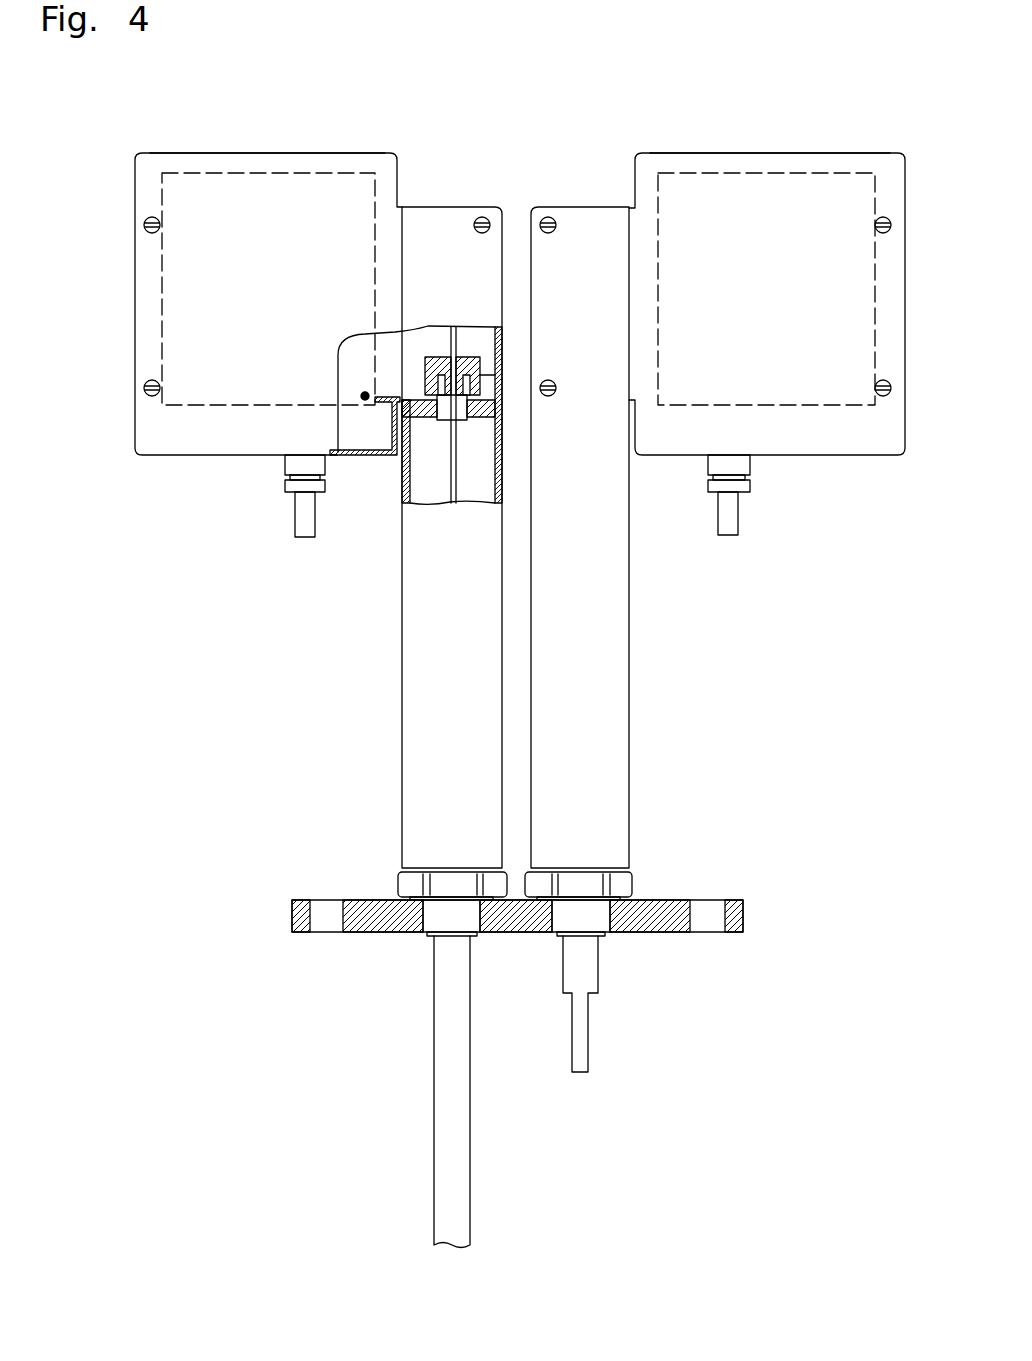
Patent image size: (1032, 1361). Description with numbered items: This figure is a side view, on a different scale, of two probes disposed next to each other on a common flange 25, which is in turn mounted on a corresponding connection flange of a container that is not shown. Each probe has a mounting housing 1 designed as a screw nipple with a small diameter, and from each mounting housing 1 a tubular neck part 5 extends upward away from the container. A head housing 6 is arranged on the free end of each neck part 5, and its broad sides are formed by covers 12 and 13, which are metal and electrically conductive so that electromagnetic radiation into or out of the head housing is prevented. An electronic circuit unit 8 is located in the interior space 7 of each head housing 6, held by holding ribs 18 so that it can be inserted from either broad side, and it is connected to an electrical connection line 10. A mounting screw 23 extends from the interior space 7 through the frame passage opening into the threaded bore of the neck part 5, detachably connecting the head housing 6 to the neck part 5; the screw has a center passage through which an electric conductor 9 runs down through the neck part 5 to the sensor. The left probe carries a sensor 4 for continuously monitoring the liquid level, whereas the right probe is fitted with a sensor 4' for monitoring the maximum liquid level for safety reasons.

The mounting housing 1 is at (400, 885).
The sensor 4 is at (380, 1092).
The sensor 4' is at (655, 1037).
The neck part 5 is at (402, 707).
The head housing 6 is at (340, 152).
The interior space 7 is at (403, 355).
The electronic circuit unit 8 is at (252, 172).
The electric conductor 9 is at (450, 487).
The electrical connection line 10 is at (305, 520).
The cover 12 is at (827, 456).
The cover 13 is at (208, 456).
The holding ribs 18 is at (385, 455).
The mounting screw 23 is at (428, 355).
The flange 25 is at (745, 908).